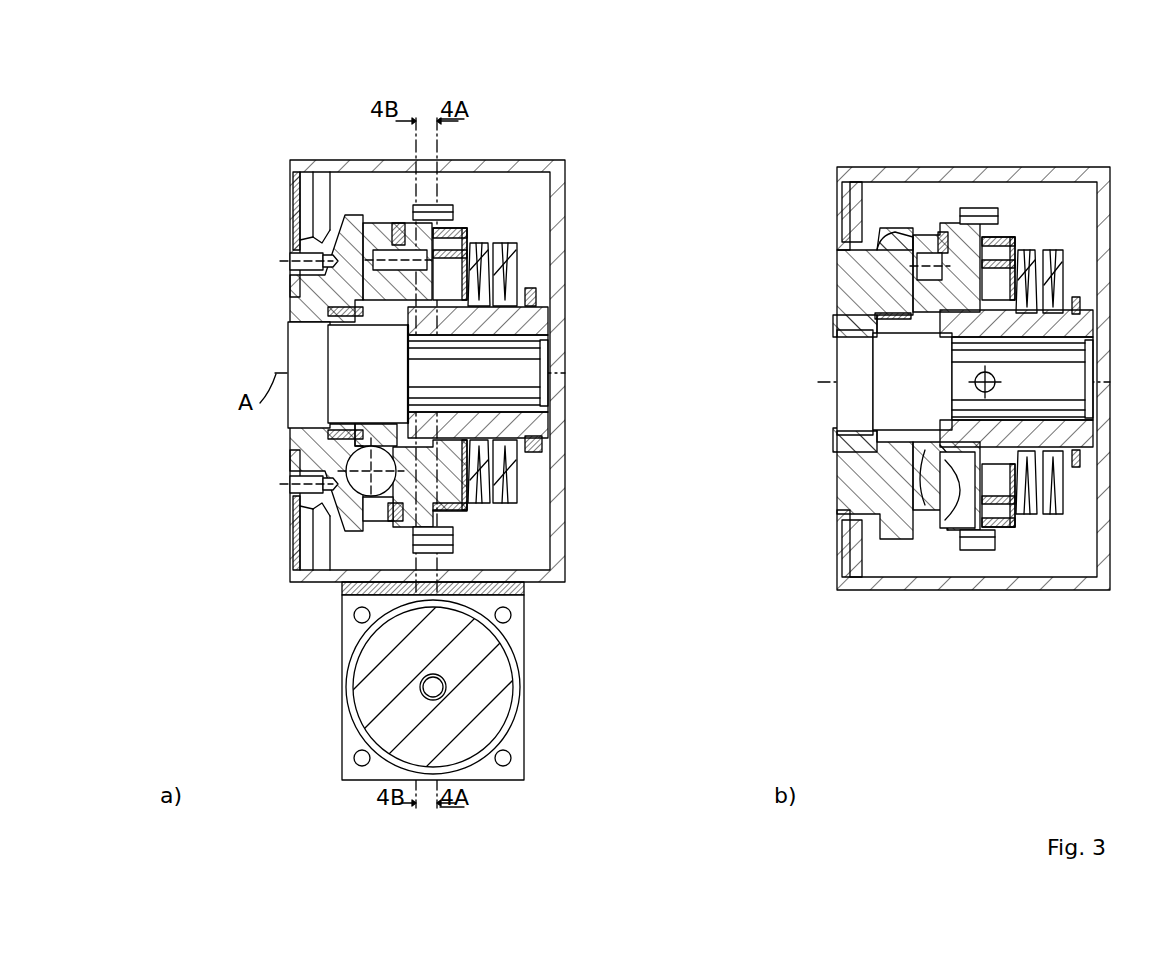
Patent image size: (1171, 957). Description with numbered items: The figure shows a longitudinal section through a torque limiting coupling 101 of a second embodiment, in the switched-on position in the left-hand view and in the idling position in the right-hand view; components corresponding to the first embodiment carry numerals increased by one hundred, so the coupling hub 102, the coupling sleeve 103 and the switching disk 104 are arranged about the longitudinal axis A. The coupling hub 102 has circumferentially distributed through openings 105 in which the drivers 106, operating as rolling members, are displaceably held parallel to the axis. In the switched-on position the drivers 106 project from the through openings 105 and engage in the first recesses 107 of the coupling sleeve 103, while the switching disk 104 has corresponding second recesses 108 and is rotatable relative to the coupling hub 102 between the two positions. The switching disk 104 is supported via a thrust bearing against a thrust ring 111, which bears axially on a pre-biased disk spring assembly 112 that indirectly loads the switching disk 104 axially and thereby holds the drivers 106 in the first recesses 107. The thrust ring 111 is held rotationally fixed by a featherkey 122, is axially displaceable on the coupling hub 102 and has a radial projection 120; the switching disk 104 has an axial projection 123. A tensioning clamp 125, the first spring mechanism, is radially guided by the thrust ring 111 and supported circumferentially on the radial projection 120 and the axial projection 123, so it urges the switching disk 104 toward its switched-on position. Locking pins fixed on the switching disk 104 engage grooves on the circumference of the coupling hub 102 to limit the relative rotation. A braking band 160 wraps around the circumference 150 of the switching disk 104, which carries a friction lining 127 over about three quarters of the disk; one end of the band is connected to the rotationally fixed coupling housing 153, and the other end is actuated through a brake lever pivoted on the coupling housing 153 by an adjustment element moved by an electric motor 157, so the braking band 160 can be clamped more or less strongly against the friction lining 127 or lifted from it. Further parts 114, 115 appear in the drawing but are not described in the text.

The torque limiting coupling 101 is at (434, 128).
The coupling hub 102 is at (343, 323).
The coupling sleeve 103 is at (293, 308).
The switching disk 104 is at (407, 216).
The through openings 105 is at (388, 443).
The drivers 106 is at (362, 490).
The first recesses 107 is at (345, 463).
The second recesses 108 is at (960, 497).
The thrust ring 111 is at (481, 265).
The disk spring assembly 112 is at (526, 267).
The screw 114 is at (293, 243).
The retaining ring 115 is at (538, 296).
The radial projection 120 is at (467, 497).
The featherkey 122 is at (405, 335).
The axial projection 123 is at (457, 513).
The tensioning clamp 125 is at (458, 245).
The friction lining 127 is at (437, 213).
The circumference 150 is at (415, 533).
The coupling housing 153 is at (549, 566).
The electric motor 157 is at (536, 686).
The braking band 160 is at (452, 207).